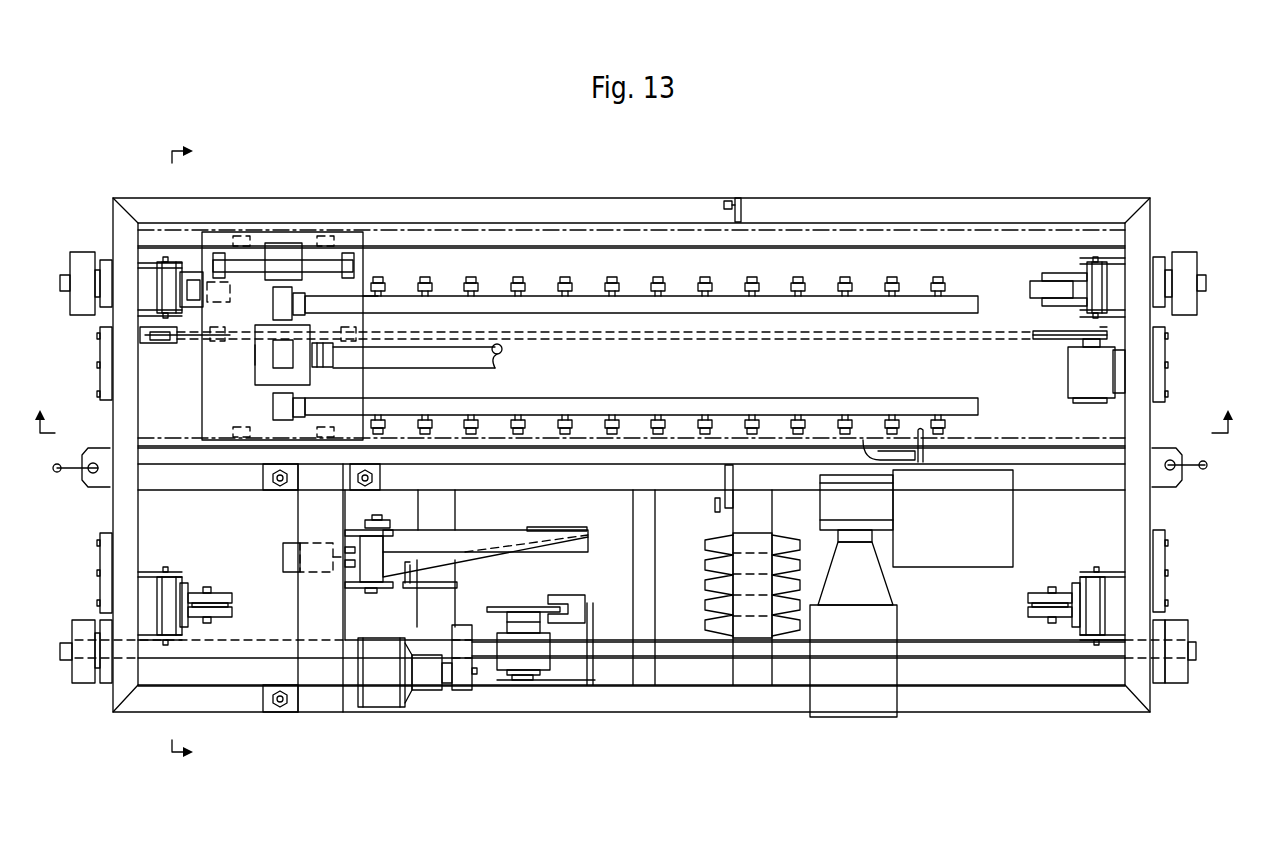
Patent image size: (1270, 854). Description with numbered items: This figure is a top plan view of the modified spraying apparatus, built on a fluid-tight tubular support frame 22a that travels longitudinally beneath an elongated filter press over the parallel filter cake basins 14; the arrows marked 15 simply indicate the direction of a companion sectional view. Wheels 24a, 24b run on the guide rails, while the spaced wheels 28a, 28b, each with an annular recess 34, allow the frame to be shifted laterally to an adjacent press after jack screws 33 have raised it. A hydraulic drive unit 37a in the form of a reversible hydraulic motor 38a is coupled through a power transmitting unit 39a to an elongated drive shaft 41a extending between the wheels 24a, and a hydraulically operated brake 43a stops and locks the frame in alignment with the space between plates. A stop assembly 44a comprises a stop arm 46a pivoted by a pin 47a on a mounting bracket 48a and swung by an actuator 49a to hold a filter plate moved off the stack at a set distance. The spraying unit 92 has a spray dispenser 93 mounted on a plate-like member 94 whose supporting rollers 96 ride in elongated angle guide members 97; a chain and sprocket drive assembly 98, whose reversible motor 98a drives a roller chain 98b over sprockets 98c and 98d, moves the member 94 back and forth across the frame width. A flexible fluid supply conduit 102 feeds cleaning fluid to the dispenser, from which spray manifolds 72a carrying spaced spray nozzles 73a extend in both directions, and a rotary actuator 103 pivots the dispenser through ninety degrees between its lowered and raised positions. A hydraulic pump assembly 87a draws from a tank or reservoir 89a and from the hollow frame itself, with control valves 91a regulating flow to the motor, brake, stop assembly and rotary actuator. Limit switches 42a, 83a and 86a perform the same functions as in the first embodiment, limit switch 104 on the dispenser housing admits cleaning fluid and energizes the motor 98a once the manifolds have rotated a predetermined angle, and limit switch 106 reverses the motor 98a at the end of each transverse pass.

The filter cake basin 14 is at (195, 452).
The section line 15 is at (636, 406).
The support frame 22a is at (632, 712).
The wheel 24a is at (78, 632).
The wheel 24b is at (78, 258).
The wheel 28a is at (222, 596).
The wheel 28b is at (1085, 268).
The jack screw 33 is at (97, 482).
The annular recess 34 is at (226, 605).
The hydraulic drive unit 37a is at (426, 686).
The reversible hydraulic motor 38a is at (392, 700).
The power transmitting unit 39a is at (462, 692).
The drive shaft 41a is at (697, 650).
The limit switch 42a is at (739, 200).
The hydraulically operated brake 43a is at (555, 595).
The stop assembly 44a is at (428, 515).
The stop arm 46a is at (555, 527).
The pin 47a is at (372, 515).
The mounting bracket 48a is at (383, 584).
The actuator 49a is at (283, 556).
The spray manifold 72a is at (908, 410).
The spray nozzle 73a is at (565, 277).
The limit switch 83a is at (722, 470).
The limit switch 86a is at (452, 583).
The hydraulic pump assembly 87a is at (850, 565).
The tank or reservoir 89a is at (928, 536).
The control valves 91a is at (718, 595).
The spraying unit 92 is at (395, 262).
The spray dispenser 93 is at (248, 353).
The plate-like member 94 is at (350, 235).
The supporting roller 96 is at (243, 235).
The angle guide member 97 is at (616, 243).
The chain and sprocket drive assembly 98 is at (1055, 318).
The reversible motor 98a is at (1082, 376).
The roller chain 98b is at (1040, 328).
The sprocket 98c is at (1103, 328).
The sprocket 98d is at (165, 351).
The flexible fluid supply conduit 102 is at (497, 352).
The rotary actuator 103 is at (285, 262).
The limit switch 104 is at (275, 358).
The limit switch 106 is at (876, 452).